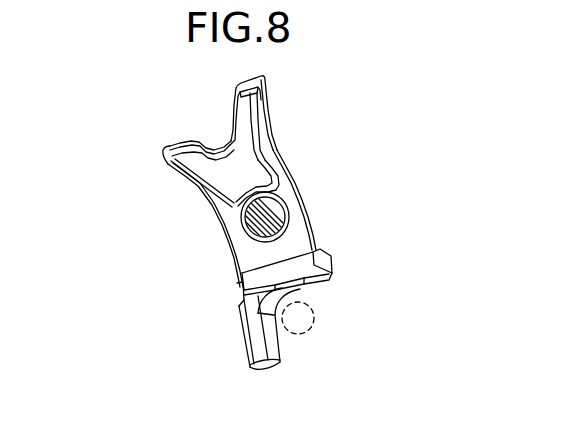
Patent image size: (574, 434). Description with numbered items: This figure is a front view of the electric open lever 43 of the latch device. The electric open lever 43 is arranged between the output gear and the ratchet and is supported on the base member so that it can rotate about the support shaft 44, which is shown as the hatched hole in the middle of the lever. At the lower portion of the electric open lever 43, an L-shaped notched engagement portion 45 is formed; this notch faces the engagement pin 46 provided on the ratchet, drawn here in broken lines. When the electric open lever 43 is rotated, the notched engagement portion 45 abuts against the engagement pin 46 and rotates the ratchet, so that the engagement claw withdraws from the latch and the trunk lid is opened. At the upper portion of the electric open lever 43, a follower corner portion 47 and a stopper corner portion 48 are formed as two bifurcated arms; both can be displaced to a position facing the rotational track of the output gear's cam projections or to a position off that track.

The electric open lever 43 is at (230, 245).
The support shaft 44 is at (288, 223).
The notched engagement portion 45 is at (283, 352).
The engagement pin 46 is at (314, 320).
The follower corner portion 47 is at (167, 155).
The stopper corner portion 48 is at (260, 103).